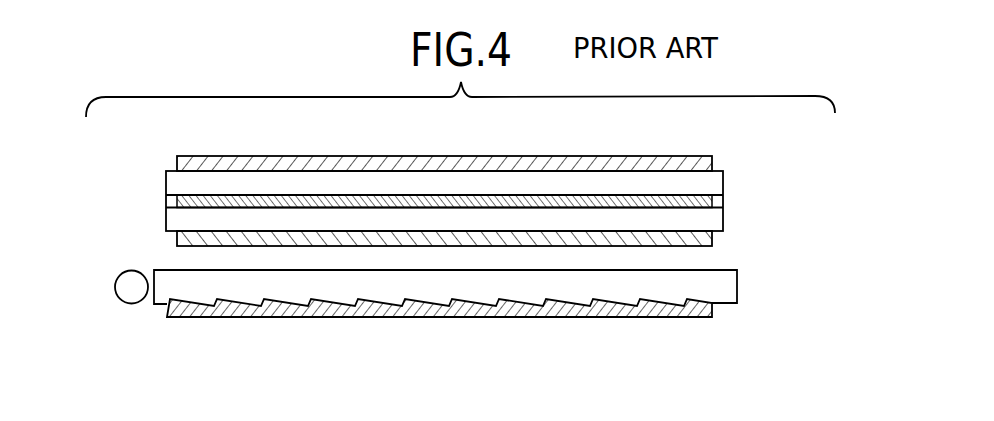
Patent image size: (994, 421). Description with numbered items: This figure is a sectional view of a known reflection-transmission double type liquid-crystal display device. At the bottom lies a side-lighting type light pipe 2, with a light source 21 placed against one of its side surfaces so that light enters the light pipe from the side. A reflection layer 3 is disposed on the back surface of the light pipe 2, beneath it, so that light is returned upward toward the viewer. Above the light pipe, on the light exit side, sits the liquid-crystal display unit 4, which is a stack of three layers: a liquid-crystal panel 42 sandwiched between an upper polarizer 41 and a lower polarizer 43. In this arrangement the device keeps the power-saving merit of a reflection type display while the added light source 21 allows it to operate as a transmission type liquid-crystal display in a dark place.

The light pipe 2 is at (722, 293).
The reflection layer 3 is at (672, 313).
The liquid-crystal display unit 4 is at (497, 198).
The light source 21 is at (130, 279).
The polarizer 41 is at (713, 158).
The liquid-crystal panel 42 is at (715, 218).
The polarizer 43 is at (477, 239).